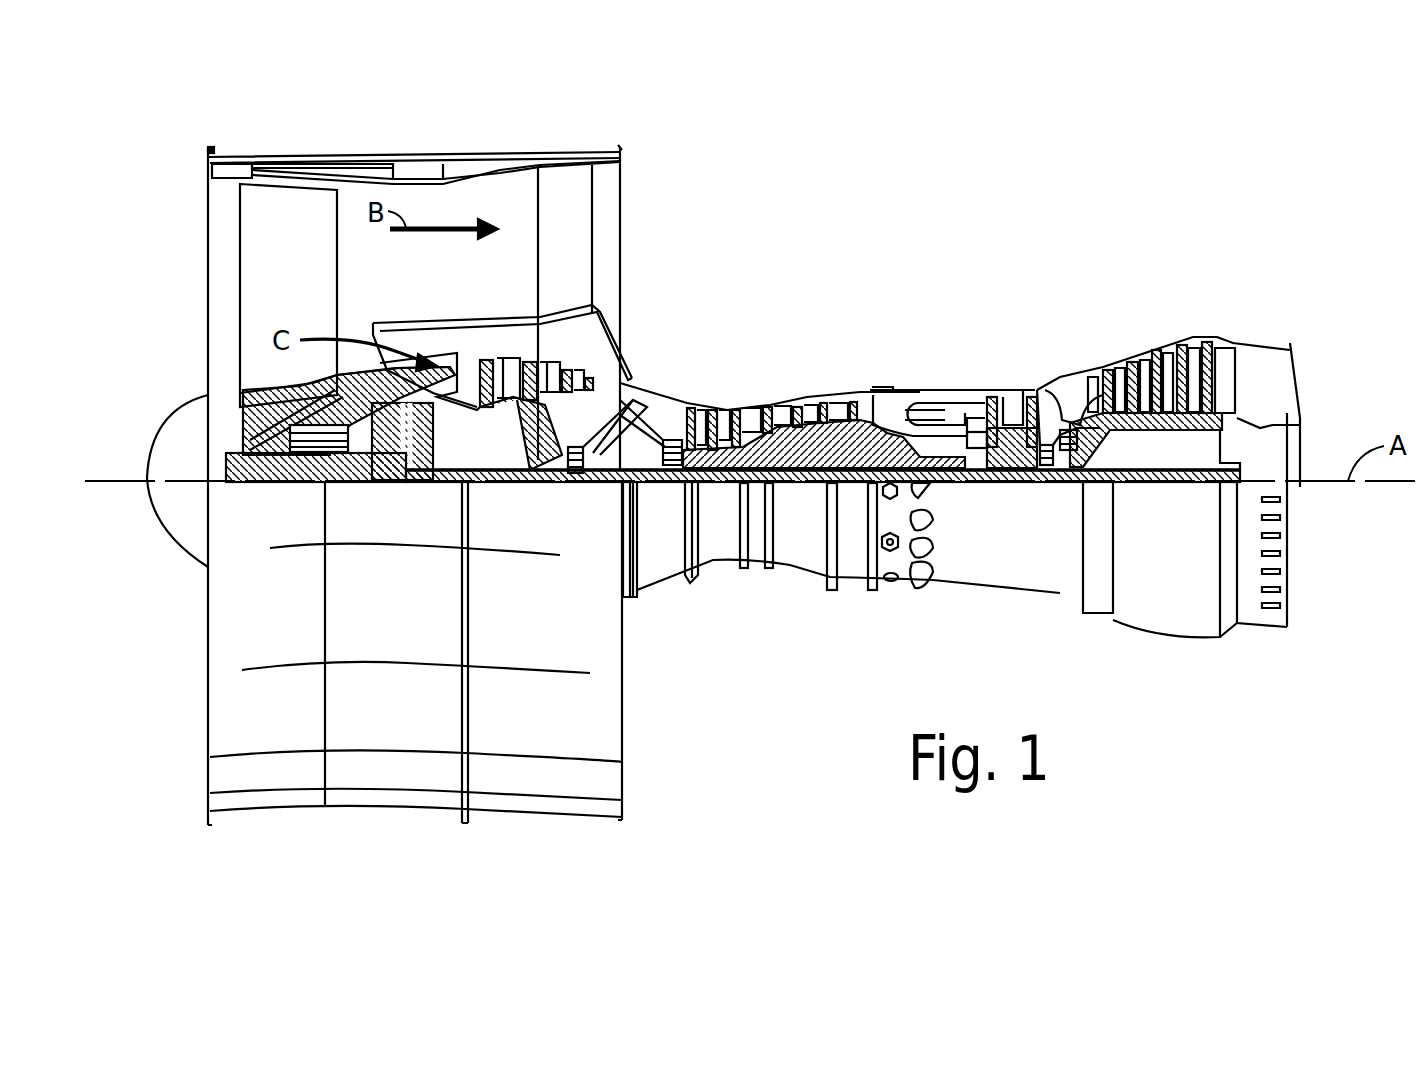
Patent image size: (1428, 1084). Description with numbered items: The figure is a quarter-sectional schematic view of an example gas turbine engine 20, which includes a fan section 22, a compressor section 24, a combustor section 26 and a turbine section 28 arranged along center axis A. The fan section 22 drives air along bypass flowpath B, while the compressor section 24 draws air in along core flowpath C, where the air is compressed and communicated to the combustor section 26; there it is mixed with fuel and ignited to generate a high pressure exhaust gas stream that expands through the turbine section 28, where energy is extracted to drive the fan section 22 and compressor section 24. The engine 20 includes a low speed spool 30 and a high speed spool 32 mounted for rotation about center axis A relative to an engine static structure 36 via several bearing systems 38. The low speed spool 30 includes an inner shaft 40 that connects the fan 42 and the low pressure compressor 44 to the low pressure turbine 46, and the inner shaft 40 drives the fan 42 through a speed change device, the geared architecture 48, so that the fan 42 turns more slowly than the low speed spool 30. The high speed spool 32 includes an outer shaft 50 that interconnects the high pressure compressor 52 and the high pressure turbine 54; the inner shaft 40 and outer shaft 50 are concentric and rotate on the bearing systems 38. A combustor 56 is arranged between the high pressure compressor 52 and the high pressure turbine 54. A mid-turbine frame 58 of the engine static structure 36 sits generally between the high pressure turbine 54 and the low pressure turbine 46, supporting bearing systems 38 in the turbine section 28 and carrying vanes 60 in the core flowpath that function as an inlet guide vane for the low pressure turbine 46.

The gas turbine engine 20 is at (1122, 155).
The fan section 22 is at (442, 123).
The compressor section 24 is at (905, 268).
The combustor section 26 is at (985, 268).
The turbine section 28 is at (1240, 268).
The low speed spool 30 is at (800, 492).
The high speed spool 32 is at (828, 447).
The engine static structure 36 is at (853, 593).
The bearing systems 38 is at (295, 483).
The inner shaft 40 is at (642, 473).
The fan 42 is at (303, 266).
The low pressure compressor section 44 is at (548, 365).
The low pressure turbine section 46 is at (1155, 348).
The geared architecture 48 is at (422, 483).
The outer shaft 50 is at (940, 460).
The high pressure compressor section 52 is at (763, 408).
The high pressure turbine section 54 is at (1013, 393).
The combustor 56 is at (927, 417).
The mid-turbine frame 58 is at (1057, 372).
The vanes 60 is at (1060, 420).